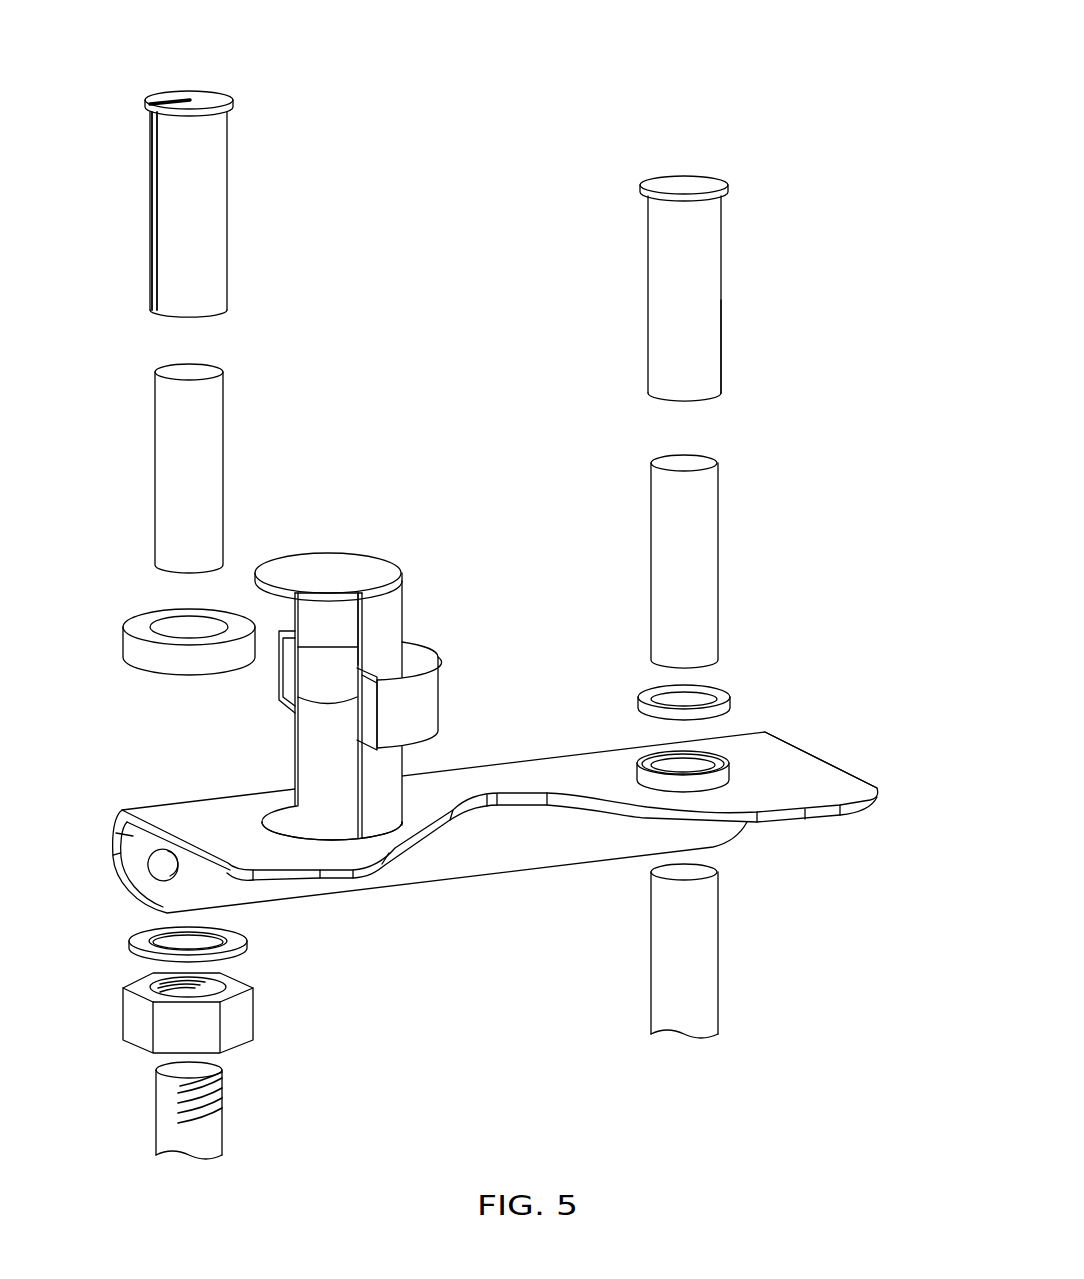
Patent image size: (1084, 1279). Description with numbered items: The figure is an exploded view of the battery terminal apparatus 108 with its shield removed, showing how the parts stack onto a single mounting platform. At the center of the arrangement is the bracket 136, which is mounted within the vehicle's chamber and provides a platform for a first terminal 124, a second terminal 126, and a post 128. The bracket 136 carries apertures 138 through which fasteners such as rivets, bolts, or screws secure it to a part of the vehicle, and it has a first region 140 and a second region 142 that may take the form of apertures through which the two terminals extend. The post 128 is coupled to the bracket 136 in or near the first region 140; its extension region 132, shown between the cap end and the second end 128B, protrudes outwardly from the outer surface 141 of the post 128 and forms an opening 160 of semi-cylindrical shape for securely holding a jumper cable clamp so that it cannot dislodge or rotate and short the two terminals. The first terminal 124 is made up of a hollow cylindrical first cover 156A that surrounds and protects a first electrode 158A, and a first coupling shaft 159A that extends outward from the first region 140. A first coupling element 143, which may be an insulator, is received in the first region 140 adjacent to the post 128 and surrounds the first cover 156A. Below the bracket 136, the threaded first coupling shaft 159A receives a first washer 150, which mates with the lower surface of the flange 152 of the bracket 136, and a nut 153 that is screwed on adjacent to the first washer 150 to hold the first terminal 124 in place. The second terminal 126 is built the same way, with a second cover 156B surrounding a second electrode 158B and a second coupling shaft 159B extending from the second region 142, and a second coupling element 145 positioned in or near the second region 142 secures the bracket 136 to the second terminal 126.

The battery terminal apparatus 108 is at (790, 62).
The first terminal 124 is at (153, 281).
The second terminal 126 is at (723, 355).
The post 128 is at (388, 616).
The second end 128B is at (400, 560).
The extension region 132 is at (427, 697).
The bracket 136 is at (823, 753).
The apertures 138 is at (158, 870).
The first region 140 is at (327, 833).
The outer surface 141 is at (382, 645).
The second region 142 is at (733, 760).
The first coupling element 143 is at (133, 648).
The second coupling element 145 is at (702, 761).
The first washer 150 is at (247, 940).
The flange 152 is at (837, 783).
The nut 153 is at (243, 1017).
The first cover 156A is at (155, 176).
The second cover 156B is at (722, 270).
The first electrode 158A is at (153, 492).
The second electrode 158B is at (720, 577).
The first coupling shaft 159A is at (210, 1132).
The second coupling shaft 159B is at (705, 913).
The opening 160 is at (303, 677).